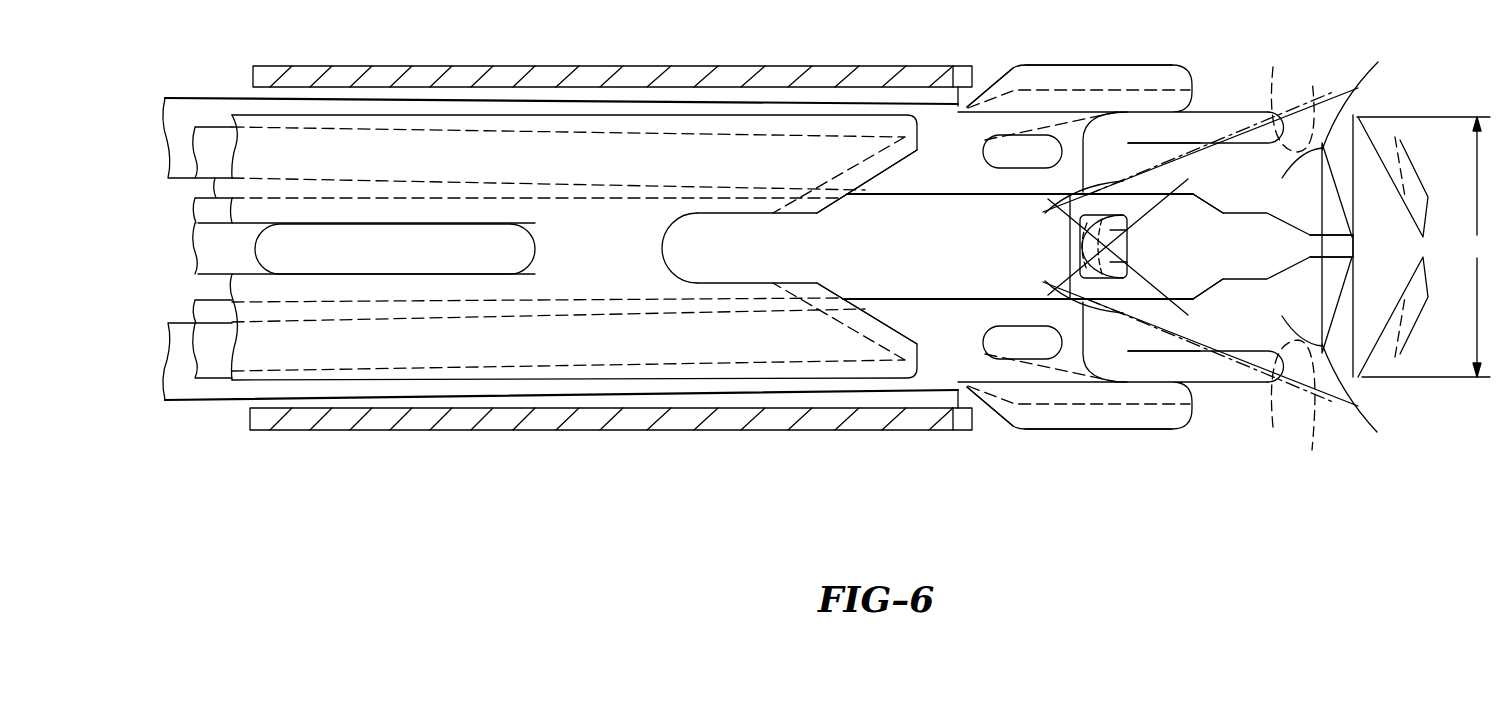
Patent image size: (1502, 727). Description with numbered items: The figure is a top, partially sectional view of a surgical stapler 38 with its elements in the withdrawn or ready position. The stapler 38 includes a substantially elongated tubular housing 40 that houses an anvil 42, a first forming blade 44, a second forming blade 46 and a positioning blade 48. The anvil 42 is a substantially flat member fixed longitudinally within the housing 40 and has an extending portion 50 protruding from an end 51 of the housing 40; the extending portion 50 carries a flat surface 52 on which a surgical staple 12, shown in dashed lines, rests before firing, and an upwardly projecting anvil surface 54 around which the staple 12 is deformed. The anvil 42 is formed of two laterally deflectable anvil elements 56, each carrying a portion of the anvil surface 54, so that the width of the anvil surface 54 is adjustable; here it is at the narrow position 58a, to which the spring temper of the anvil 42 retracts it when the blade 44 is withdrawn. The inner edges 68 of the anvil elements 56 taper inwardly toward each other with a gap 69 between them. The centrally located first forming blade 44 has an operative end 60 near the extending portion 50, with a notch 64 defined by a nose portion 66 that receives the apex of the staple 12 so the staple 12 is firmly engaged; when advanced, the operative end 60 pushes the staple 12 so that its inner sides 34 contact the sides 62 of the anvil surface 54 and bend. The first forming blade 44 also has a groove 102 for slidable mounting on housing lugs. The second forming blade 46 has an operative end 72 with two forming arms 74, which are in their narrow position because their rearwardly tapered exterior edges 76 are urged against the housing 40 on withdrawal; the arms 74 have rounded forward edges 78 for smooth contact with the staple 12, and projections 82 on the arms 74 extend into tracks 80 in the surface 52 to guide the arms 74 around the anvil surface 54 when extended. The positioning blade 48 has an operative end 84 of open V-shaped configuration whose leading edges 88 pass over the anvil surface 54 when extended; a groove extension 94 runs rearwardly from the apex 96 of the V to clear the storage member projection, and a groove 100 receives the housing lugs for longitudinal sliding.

The surgical staple 12 is at (1265, 490).
The inner sides 34 is at (1293, 246).
The surgical stapler 38 is at (680, 482).
The housing 40 is at (447, 430).
The anvil 42 is at (1380, 203).
The first forming blade 44 is at (939, 266).
The second forming blade 46 is at (947, 137).
The positioning blade 48 is at (705, 115).
The extending portion 50 is at (1279, 478).
The end 51 is at (986, 420).
The flat surface 52 is at (1253, 201).
The anvil surface 54 is at (1345, 140).
The anvil elements 56 is at (1332, 115).
The narrow position 58a is at (1427, 247).
The operative end 60 is at (1142, 256).
The sides 62 is at (1364, 249).
The notch 64 is at (1082, 222).
The nose portion 66 is at (1082, 270).
The inner edges 68 is at (1213, 205).
The gap 69 is at (1337, 243).
The operative end 72 is at (1077, 447).
The forming arms 74 is at (1140, 65).
The rearwardly tapered exterior edge 76 is at (1003, 77).
The forward edges 78 is at (1193, 90).
The tracks 80 is at (1223, 122).
The projections 82 is at (1036, 168).
The operative end 84 is at (832, 398).
The leading edges 88 is at (879, 176).
The groove extension 94 is at (713, 268).
The apex 96 is at (753, 258).
The groove 100 is at (493, 223).
The groove 102 is at (258, 242).